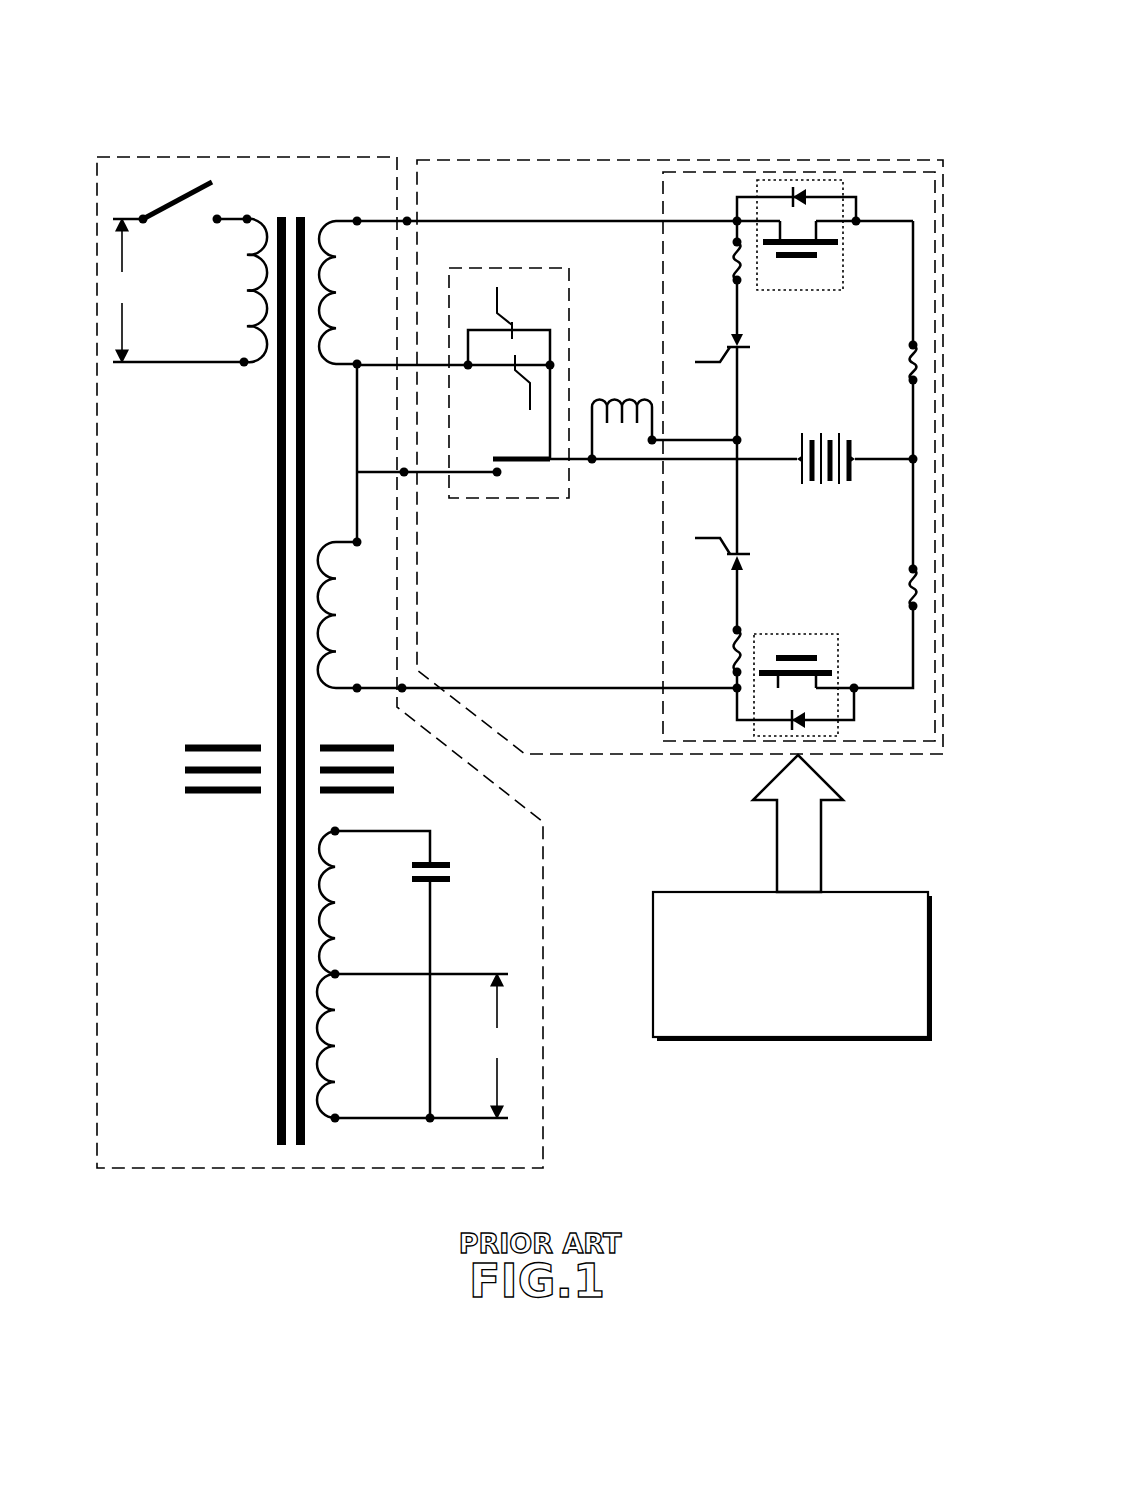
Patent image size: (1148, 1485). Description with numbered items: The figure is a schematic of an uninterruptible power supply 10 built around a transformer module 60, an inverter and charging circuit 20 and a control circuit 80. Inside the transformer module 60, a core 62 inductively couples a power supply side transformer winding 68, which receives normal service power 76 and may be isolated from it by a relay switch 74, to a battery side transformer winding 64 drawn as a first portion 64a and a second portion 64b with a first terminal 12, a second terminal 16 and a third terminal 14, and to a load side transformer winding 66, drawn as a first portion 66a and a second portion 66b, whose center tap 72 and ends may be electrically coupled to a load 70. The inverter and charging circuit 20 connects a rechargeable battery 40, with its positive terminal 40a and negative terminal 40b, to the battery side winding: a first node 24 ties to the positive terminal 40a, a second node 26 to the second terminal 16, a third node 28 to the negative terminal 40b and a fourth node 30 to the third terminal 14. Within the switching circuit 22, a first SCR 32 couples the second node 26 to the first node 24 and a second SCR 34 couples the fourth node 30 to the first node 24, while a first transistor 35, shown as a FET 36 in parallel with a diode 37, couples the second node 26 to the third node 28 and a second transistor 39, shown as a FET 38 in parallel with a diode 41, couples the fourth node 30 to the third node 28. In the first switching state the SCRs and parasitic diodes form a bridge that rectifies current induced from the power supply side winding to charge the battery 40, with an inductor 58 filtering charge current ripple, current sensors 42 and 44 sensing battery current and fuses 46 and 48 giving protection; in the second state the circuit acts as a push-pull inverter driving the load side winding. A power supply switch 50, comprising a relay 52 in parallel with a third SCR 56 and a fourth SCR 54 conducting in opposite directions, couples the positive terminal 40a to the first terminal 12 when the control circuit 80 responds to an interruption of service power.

The uninterruptible power supply 10 is at (542, 108).
The first terminal 12 is at (416, 476).
The third terminal 14 is at (406, 686).
The second terminal 16 is at (409, 219).
The inverter and charging circuit 20 is at (642, 155).
The switching circuit 22 is at (681, 205).
The first node 24 is at (740, 439).
The second node 26 is at (737, 219).
The third node 28 is at (911, 458).
The fourth node 30 is at (737, 691).
The first SCR 32 is at (743, 340).
The second SCR 34 is at (742, 565).
The first transistor 35 is at (805, 195).
The FET 36 is at (797, 259).
The diode 37 is at (800, 188).
The FET 38 is at (795, 656).
The second transistor 39 is at (809, 698).
The rechargeable battery 40 is at (822, 454).
The positive terminal 40a is at (798, 462).
The negative terminal 40b is at (853, 462).
The diode 41 is at (798, 730).
The current sensor 42 is at (911, 362).
The current sensor 44 is at (907, 588).
The fuse 46 is at (733, 260).
The fuse 48 is at (736, 655).
The power supply switch 50 is at (575, 320).
The relay 52 is at (498, 478).
The fourth SCR 54 is at (510, 368).
The third SCR 56 is at (516, 328).
The inductor 58 is at (613, 402).
The transformer module 60 is at (173, 153).
The core 62 is at (278, 474).
The battery side transformer winding 64 is at (354, 477).
The first portion 64a is at (330, 302).
The second portion 64b is at (332, 622).
The load side transformer winding 66 is at (415, 995).
The first portion 66a is at (328, 913).
The second portion 66b is at (328, 1097).
The power supply side transformer winding 68 is at (253, 293).
The load 70 is at (498, 1046).
The center tap 72 is at (401, 966).
The relay switch 74 is at (188, 207).
The service power 76 is at (121, 290).
The control circuit 80 is at (780, 1016).